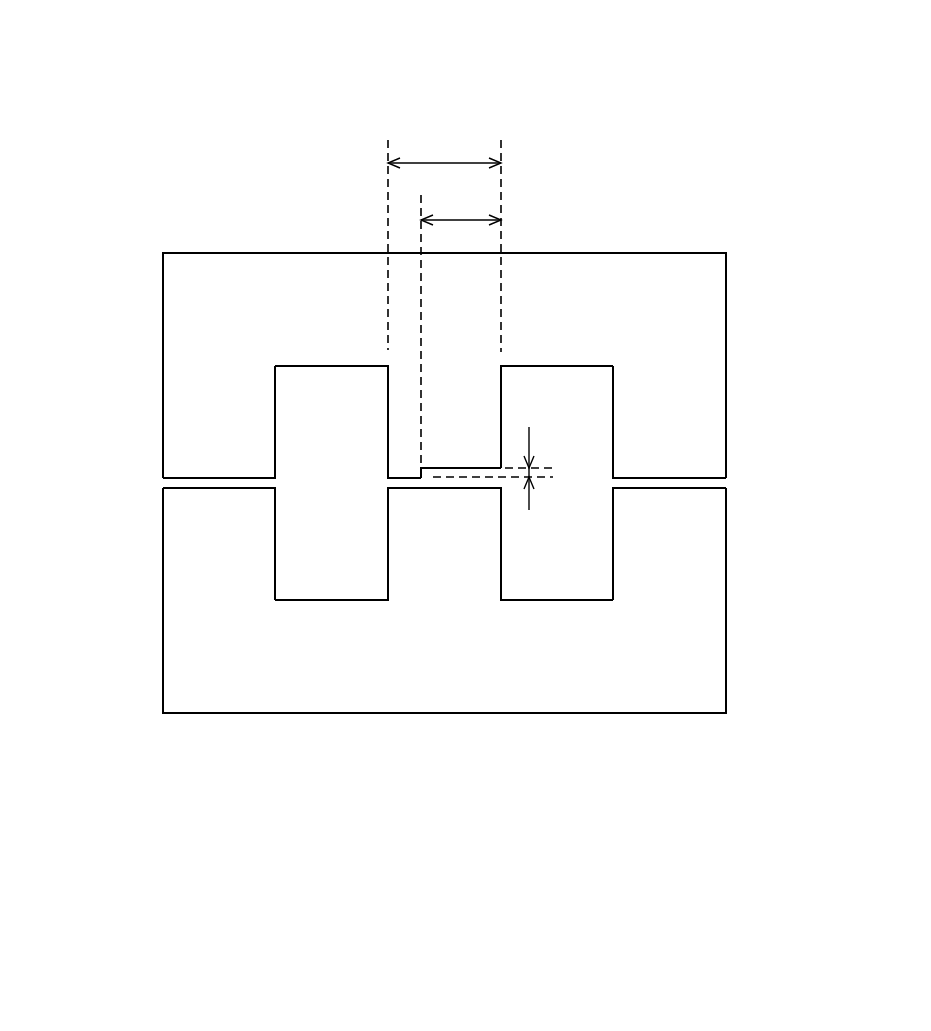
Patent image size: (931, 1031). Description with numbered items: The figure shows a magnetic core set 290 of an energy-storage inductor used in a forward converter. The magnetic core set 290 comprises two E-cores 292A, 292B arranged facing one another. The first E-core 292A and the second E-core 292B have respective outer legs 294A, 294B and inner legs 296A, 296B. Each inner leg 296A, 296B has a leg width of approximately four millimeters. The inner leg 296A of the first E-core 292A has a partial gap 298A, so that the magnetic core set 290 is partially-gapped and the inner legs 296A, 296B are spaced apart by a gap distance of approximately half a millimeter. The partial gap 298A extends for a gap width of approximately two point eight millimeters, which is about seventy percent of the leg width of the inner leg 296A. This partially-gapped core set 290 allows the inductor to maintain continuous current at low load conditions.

The magnetic core set 290 is at (238, 160).
The first E-core 292A is at (670, 281).
The second E-core 292B is at (258, 675).
The outer legs of first E-core 294A is at (182, 459).
The outer legs of second E-core 294B is at (200, 543).
The inner leg of first E-core 296A is at (402, 416).
The inner leg of second E-core 296B is at (435, 562).
The partial gap 298A is at (447, 446).